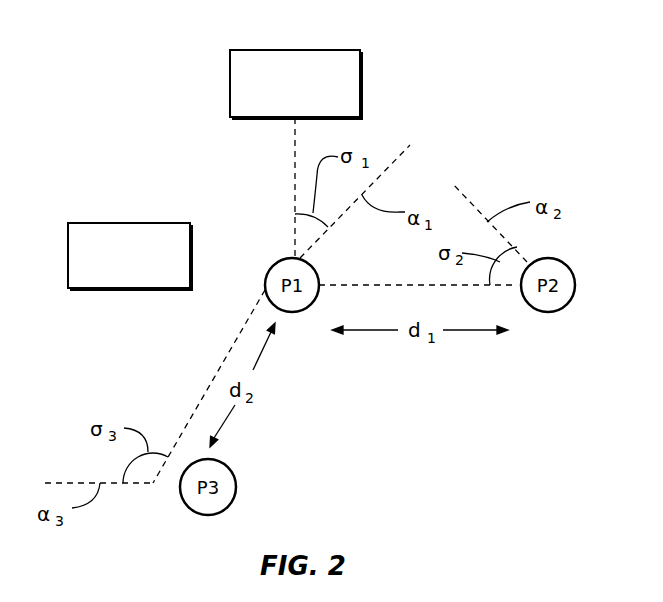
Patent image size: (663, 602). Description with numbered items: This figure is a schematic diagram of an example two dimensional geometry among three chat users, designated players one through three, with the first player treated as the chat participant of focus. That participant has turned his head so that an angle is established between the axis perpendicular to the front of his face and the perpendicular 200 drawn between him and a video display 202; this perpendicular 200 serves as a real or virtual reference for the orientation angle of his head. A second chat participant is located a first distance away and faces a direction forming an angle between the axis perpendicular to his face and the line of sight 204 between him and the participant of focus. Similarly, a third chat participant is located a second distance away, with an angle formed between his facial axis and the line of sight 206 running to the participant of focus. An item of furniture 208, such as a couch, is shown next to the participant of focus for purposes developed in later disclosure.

The perpendicular 200 is at (293, 160).
The video display 202 is at (294, 50).
The line of sight 204 is at (442, 283).
The line of sight 206 is at (222, 362).
The item of furniture 208 is at (130, 223).